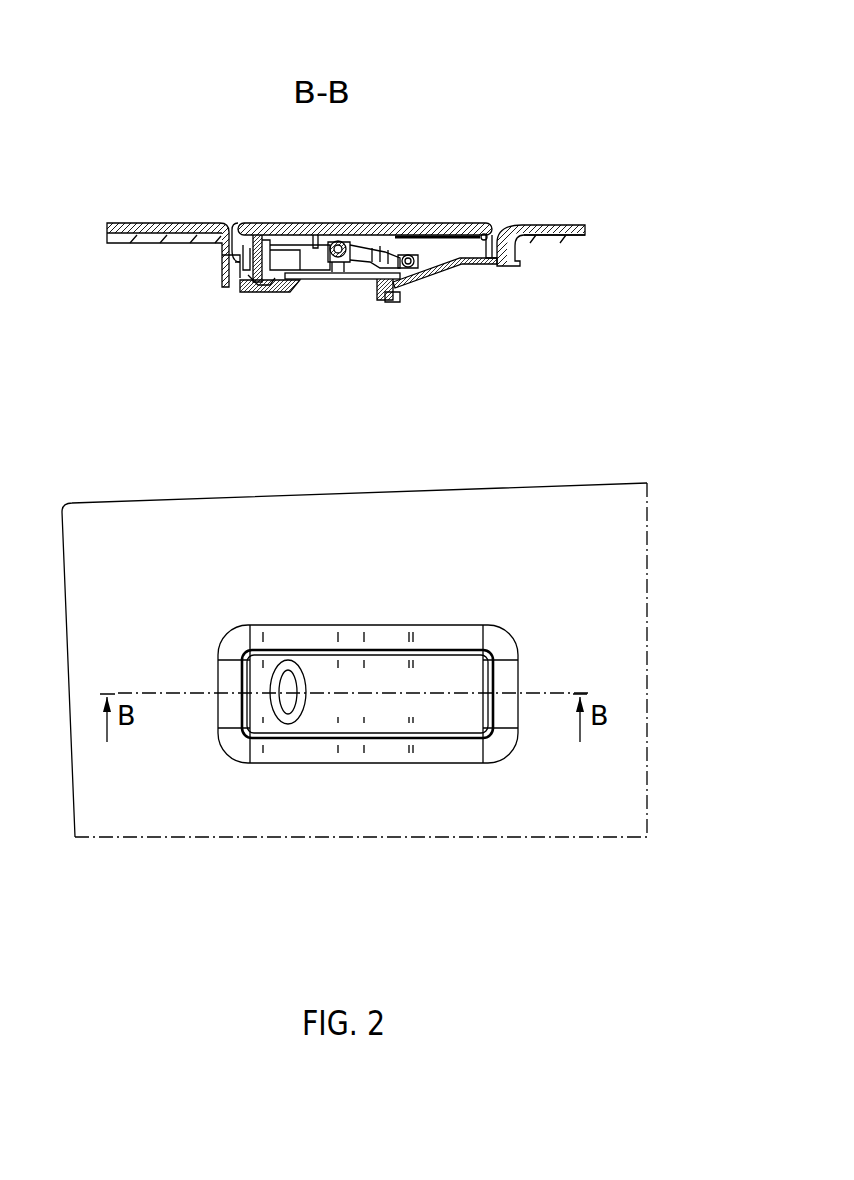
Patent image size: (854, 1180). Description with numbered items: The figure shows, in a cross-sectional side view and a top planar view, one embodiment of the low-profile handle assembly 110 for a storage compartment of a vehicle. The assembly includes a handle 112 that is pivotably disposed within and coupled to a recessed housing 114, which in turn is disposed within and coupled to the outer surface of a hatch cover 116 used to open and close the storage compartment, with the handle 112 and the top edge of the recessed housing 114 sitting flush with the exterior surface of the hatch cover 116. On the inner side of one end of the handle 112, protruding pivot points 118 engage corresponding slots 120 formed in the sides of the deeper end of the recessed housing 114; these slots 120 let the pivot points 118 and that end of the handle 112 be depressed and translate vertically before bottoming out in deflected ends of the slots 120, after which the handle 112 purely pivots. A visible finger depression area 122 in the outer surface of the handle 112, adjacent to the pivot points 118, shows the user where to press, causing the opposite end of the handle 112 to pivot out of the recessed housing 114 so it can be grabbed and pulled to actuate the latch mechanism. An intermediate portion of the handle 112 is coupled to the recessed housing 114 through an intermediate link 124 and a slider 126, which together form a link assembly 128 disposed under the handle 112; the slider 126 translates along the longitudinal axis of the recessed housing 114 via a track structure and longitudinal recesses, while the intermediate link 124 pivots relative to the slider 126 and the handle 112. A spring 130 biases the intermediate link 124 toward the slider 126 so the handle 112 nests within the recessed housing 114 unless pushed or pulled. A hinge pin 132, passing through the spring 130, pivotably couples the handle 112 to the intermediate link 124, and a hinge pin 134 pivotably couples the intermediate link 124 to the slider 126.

The low-profile handle assembly 110 is at (338, 186).
The handle 112 is at (481, 222).
The recessed housing 114 is at (462, 268).
The hatch cover 116 is at (560, 218).
The protruding pivot points 118 is at (252, 253).
The slots 120 is at (260, 283).
The finger depression area 122 is at (288, 218).
The intermediate link 124 is at (374, 270).
The slider 126 is at (381, 284).
The link assembly 128 is at (336, 284).
The spring 130 is at (350, 230).
The hinge pin 132 is at (350, 230).
The hinge pin 134 is at (412, 250).